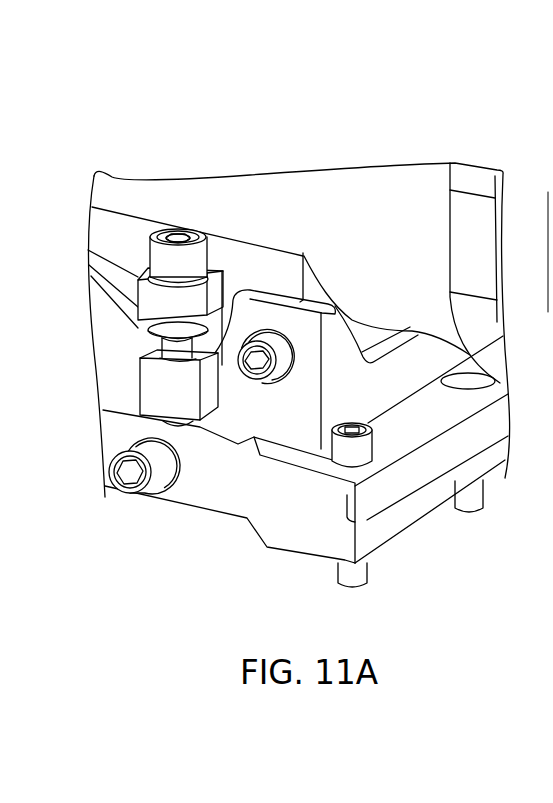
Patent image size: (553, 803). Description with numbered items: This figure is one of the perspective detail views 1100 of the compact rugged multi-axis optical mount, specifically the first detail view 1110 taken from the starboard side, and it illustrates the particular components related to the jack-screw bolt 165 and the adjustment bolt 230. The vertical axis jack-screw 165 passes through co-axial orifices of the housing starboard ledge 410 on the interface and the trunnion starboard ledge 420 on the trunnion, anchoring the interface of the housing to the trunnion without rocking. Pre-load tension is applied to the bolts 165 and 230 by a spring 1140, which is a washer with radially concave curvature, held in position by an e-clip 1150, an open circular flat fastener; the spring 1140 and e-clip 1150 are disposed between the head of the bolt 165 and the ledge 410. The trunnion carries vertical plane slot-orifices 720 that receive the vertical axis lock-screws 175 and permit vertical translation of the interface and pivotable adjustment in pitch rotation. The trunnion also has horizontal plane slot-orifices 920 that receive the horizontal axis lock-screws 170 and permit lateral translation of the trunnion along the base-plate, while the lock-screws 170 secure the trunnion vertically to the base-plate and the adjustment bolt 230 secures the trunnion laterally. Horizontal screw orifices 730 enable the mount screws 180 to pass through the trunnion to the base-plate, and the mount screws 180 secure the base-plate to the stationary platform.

The perspective detail views 1100 is at (387, 115).
The first detail view 1110 is at (288, 160).
The vertical axis jack-screws 165 is at (179, 233).
The housing starboard ledge 410 is at (90, 251).
The spring 1140 is at (218, 306).
The e-clip 1150 is at (140, 343).
The trunnion starboard ledge 420 is at (140, 396).
The adjustment bolt 230 is at (105, 482).
The vertical plane slot-orifices 720 is at (268, 333).
The vertical axis lock-screws 175 is at (258, 380).
The horizontal screw orifices 730 is at (455, 372).
The horizontal plane slot-orifices 920 is at (336, 447).
The horizontal axis lock-screws 170 is at (373, 441).
The mount screws 180 is at (471, 512).